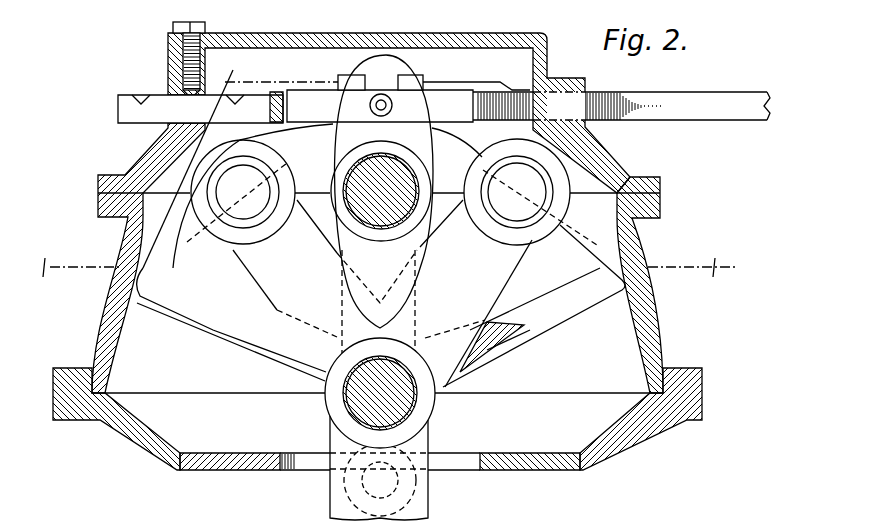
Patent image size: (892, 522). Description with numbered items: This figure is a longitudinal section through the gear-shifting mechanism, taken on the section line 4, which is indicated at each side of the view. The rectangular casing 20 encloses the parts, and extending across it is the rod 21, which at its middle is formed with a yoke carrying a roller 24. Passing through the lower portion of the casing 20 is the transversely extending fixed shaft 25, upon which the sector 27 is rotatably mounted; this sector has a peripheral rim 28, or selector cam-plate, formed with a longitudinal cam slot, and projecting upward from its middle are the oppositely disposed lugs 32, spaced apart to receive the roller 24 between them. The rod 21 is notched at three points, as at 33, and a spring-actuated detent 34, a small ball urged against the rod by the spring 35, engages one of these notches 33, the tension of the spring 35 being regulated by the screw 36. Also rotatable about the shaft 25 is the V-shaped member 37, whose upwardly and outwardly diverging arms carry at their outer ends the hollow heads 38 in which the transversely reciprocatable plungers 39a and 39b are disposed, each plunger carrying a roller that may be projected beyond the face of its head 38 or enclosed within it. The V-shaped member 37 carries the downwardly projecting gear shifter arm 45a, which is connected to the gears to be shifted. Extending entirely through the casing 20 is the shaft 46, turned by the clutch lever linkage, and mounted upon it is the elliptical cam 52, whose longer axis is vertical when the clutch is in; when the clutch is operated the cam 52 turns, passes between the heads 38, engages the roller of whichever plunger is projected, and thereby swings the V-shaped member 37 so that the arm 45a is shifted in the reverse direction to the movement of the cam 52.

The section line 4- 4 is at (380, 270).
The casing 20 is at (657, 336).
The rod 21 is at (707, 118).
The roller 24 is at (384, 95).
The fixed shaft 25 is at (410, 412).
The sector 27 is at (526, 328).
The peripheral rim 28 is at (172, 266).
The lugs 32 is at (420, 90).
The notches 33 is at (154, 88).
The spring-actuated detent 34 is at (222, 95).
The spring 35 is at (184, 58).
The screw 36 is at (200, 32).
The V-shaped member 37 is at (388, 351).
The hollow head 38 is at (492, 246).
The plunger 39a is at (243, 192).
The plunger 39b is at (528, 213).
The gear shifter arm 45a is at (415, 492).
The shaft 46 is at (390, 228).
The cam 52 is at (405, 285).